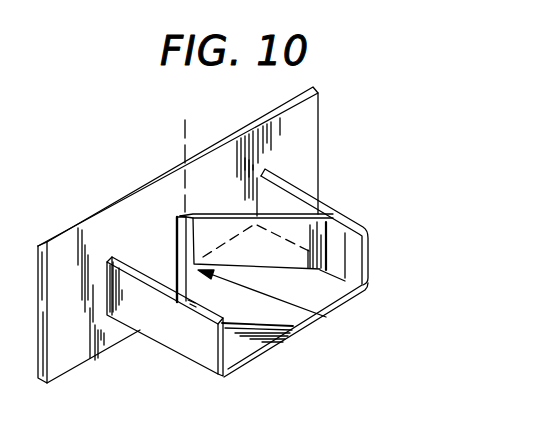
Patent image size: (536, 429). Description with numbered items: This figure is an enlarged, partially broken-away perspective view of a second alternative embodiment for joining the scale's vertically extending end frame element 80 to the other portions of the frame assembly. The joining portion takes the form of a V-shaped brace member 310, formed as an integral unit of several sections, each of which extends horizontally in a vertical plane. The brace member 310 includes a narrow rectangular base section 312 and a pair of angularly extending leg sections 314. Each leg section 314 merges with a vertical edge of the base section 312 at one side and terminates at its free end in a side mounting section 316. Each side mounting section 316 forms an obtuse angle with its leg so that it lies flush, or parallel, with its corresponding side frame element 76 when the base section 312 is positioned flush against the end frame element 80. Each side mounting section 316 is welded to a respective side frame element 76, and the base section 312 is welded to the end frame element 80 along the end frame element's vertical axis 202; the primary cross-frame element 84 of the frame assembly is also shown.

The end frame element 80 is at (65, 250).
The vertical axis 202 is at (185, 143).
The side frame element 76 is at (258, 210).
The base section 312 is at (196, 226).
The leg section 314 is at (175, 250).
The side mounting section 316 is at (330, 230).
The V-shaped brace member 310 is at (289, 322).
The primary cross-frame element 84 is at (247, 335).